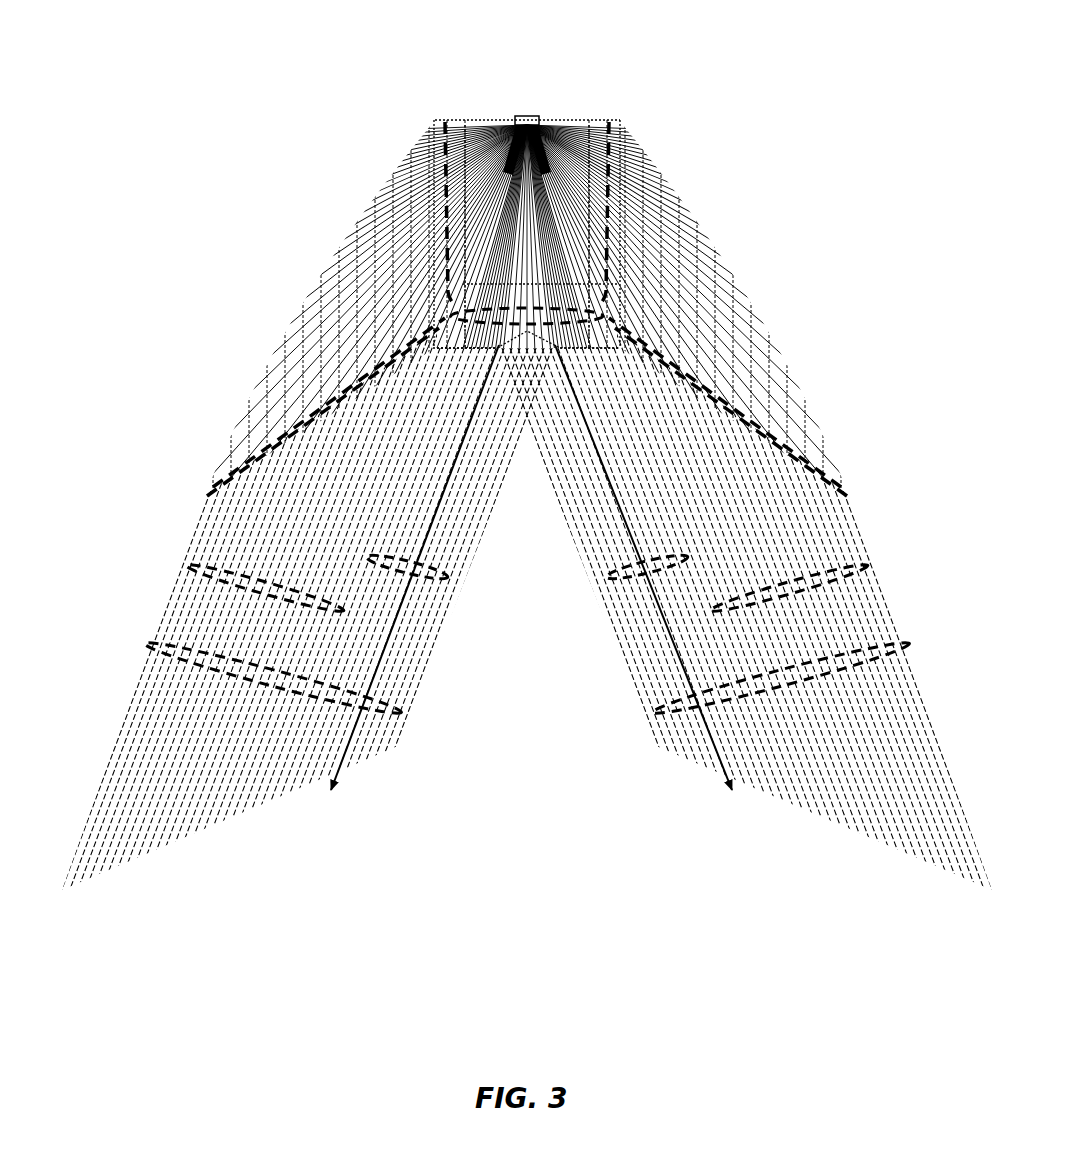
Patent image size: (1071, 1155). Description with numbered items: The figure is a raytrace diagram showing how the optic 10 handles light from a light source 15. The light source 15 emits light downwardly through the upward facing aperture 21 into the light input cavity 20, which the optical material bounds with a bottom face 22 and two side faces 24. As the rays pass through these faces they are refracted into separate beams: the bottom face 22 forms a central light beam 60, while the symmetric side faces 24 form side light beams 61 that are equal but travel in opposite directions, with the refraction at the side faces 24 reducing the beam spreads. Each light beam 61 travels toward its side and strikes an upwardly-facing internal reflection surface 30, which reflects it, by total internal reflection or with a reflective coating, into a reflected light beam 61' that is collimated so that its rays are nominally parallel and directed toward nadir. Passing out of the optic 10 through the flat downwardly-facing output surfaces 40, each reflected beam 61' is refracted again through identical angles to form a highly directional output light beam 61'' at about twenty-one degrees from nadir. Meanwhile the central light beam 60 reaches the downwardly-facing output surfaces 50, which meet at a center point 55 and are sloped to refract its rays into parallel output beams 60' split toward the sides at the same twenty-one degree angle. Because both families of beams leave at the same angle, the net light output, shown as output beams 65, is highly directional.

The optic 10 is at (706, 68).
The light source 15 is at (528, 117).
The light input cavity 20 is at (503, 140).
The aperture 21 is at (571, 118).
The bottom face 22 is at (536, 282).
The side faces 24 is at (578, 187).
The internal reflection surfaces 30 is at (382, 172).
The downwardly-facing output surfaces 40 is at (325, 420).
The downwardly-facing output surfaces 50 is at (556, 345).
The center point 55 is at (527, 335).
The light beam 60 is at (625, 287).
The output beams 60' is at (527, 589).
The light beams 61 is at (529, 173).
The reflected light beam 61' is at (532, 407).
The output light beams 61'' is at (530, 575).
The output beams 65 is at (404, 711).